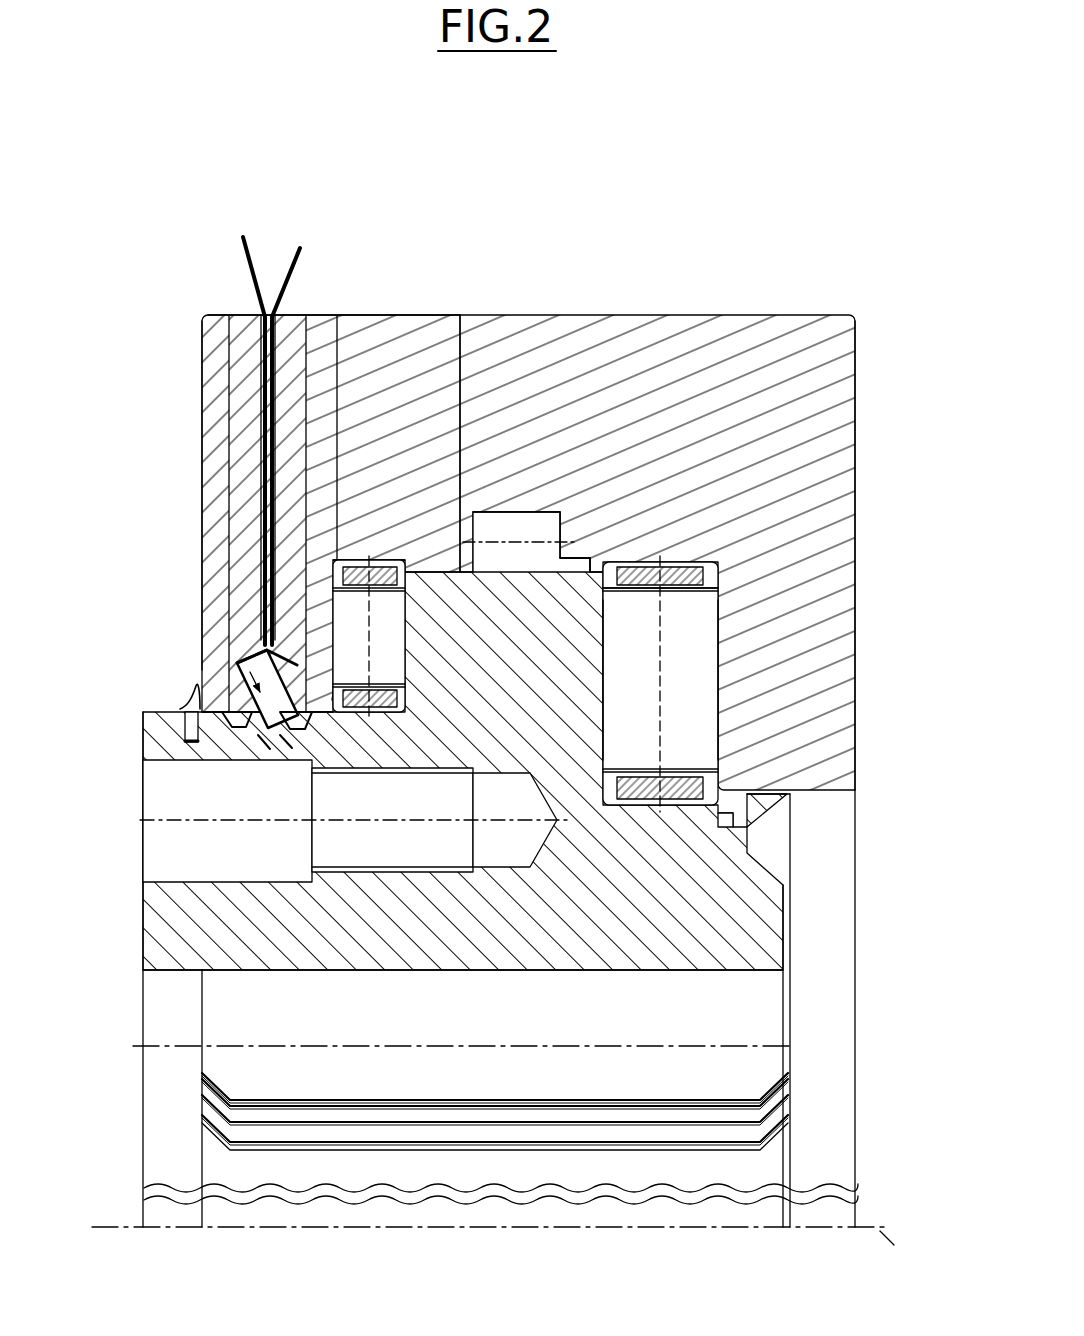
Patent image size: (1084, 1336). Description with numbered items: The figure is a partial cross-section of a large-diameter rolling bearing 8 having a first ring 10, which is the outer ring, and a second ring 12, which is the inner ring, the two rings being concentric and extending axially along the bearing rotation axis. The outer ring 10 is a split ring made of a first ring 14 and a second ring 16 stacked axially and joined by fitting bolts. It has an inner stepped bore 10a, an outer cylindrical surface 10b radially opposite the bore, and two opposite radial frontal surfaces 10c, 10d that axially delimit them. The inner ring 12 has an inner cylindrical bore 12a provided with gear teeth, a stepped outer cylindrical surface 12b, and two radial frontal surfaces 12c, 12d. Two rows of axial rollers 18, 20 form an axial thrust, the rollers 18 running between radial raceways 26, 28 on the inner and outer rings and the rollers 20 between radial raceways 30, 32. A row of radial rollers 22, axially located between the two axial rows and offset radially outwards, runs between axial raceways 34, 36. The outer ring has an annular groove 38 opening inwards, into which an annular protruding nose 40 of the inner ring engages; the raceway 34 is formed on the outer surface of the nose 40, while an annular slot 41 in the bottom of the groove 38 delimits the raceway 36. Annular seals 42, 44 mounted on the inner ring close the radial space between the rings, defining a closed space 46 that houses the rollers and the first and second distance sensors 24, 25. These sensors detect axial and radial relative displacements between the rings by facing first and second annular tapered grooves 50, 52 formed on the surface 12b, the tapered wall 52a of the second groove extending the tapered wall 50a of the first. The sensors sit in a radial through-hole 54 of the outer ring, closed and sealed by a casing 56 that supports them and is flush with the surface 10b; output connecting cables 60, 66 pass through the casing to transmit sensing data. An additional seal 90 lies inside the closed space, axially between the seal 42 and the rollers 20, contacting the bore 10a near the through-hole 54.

The bearing 8 is at (874, 228).
The first ring 10 is at (561, 286).
The bore 10a is at (250, 735).
The outer cylindrical surface 10b is at (203, 314).
The radial frontal surface 10c is at (202, 352).
The radial frontal surface 10d is at (855, 522).
The second ring 12 is at (487, 899).
The inner cylindrical bore 12a is at (735, 972).
The stepped outer cylindrical surface 12b is at (150, 718).
The radial frontal surface 12c is at (143, 944).
The radial frontal surface 12d is at (790, 945).
The first ring 14 is at (775, 302).
The second ring 16 is at (368, 304).
The axial rollers 18 is at (675, 645).
The axial rollers 20 is at (372, 648).
The radial rollers 22 is at (506, 566).
The first distance sensor 24 is at (234, 686).
The second distance sensor 25 is at (258, 648).
The radial raceway 26 is at (603, 657).
The radial raceway 28 is at (700, 730).
The radial raceway 30 is at (320, 645).
The radial raceway 32 is at (346, 548).
The axial raceway 34 is at (572, 565).
The axial raceway 36 is at (548, 565).
The annular groove 38 is at (603, 610).
The annular protruding nose 40 is at (496, 702).
The annular slot 41 is at (490, 526).
The annular seal 42 is at (188, 692).
The annular seal 44 is at (762, 808).
The closed space 46 is at (595, 553).
The first annular tapered groove 50 is at (243, 727).
The tapered wall 50a is at (262, 745).
The second annular tapered groove 52 is at (295, 729).
The tapered wall 52a is at (290, 748).
The radial through-hole 54 is at (242, 426).
The casing 56 is at (244, 476).
The output connecting cable 60 is at (290, 259).
The output connecting cable 66 is at (244, 249).
The additional seal 90 is at (337, 316).